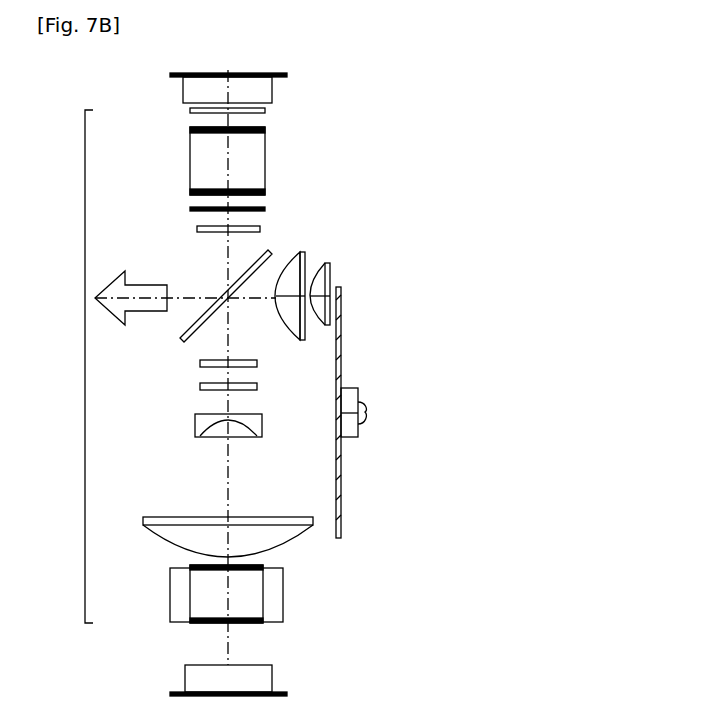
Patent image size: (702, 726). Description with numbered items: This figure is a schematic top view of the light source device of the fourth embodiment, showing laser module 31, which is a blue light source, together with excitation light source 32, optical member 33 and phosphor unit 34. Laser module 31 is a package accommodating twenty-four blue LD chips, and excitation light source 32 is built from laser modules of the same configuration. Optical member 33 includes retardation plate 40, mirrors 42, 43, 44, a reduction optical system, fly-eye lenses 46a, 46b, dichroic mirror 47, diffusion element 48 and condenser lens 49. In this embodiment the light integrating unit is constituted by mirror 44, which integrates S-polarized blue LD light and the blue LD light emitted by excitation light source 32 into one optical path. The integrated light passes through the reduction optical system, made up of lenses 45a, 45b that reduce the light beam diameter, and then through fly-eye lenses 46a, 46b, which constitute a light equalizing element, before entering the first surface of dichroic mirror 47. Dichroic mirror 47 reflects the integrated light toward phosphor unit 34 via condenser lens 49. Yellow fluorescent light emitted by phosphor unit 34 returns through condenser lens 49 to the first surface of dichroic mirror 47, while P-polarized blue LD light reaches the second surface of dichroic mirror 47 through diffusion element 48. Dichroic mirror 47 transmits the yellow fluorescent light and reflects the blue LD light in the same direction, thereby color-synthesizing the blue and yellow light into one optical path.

The laser module 31 is at (183, 95).
The excitation light source 32 is at (185, 678).
The optical member 33 is at (85, 369).
The phosphor unit 34 is at (353, 375).
The retardation plate 40 is at (265, 110).
The mirror 42 is at (265, 158).
The mirror 43 is at (260, 625).
The mirror 44 is at (170, 598).
The lens 45a is at (143, 517).
The lens 45b is at (195, 425).
The fly-eye lens 46a is at (200, 386).
The fly-eye lens 46b is at (200, 363).
The dichroic mirror 47 is at (271, 247).
The diffusion element 48 is at (197, 230).
The condenser lens 49 is at (309, 243).